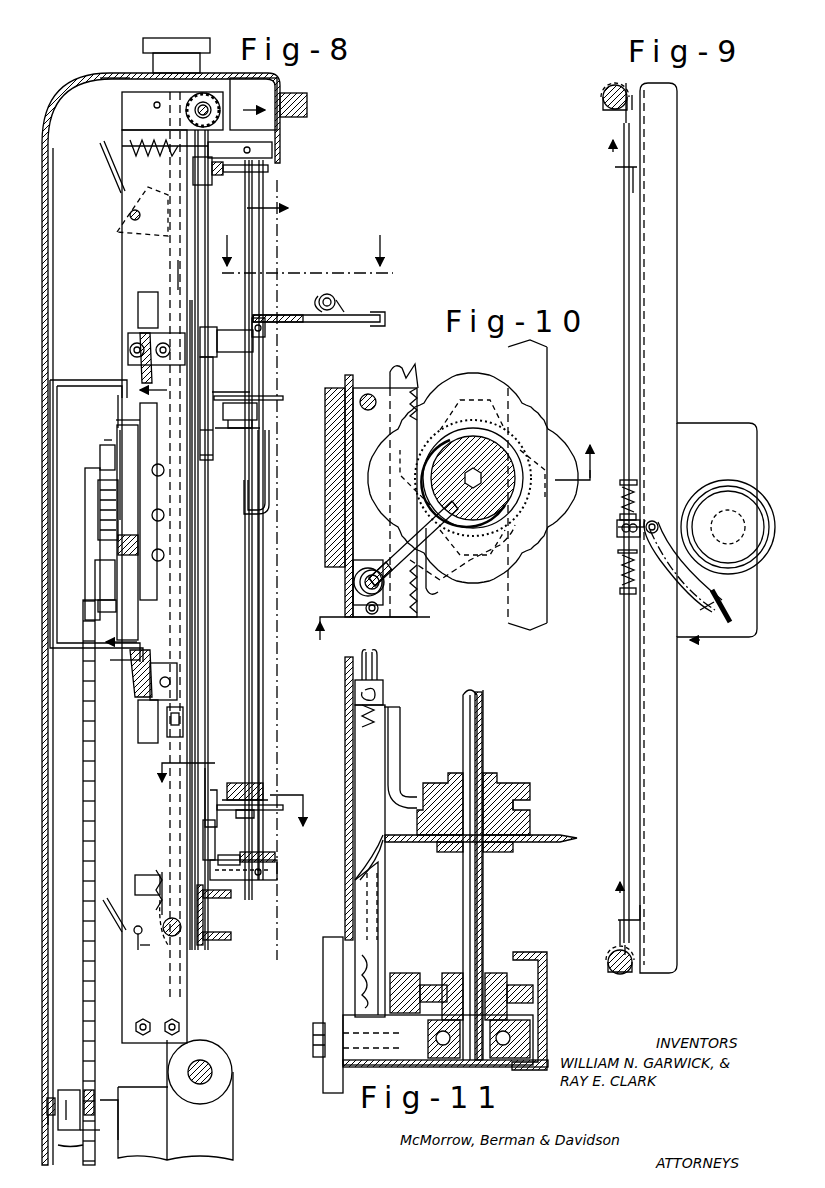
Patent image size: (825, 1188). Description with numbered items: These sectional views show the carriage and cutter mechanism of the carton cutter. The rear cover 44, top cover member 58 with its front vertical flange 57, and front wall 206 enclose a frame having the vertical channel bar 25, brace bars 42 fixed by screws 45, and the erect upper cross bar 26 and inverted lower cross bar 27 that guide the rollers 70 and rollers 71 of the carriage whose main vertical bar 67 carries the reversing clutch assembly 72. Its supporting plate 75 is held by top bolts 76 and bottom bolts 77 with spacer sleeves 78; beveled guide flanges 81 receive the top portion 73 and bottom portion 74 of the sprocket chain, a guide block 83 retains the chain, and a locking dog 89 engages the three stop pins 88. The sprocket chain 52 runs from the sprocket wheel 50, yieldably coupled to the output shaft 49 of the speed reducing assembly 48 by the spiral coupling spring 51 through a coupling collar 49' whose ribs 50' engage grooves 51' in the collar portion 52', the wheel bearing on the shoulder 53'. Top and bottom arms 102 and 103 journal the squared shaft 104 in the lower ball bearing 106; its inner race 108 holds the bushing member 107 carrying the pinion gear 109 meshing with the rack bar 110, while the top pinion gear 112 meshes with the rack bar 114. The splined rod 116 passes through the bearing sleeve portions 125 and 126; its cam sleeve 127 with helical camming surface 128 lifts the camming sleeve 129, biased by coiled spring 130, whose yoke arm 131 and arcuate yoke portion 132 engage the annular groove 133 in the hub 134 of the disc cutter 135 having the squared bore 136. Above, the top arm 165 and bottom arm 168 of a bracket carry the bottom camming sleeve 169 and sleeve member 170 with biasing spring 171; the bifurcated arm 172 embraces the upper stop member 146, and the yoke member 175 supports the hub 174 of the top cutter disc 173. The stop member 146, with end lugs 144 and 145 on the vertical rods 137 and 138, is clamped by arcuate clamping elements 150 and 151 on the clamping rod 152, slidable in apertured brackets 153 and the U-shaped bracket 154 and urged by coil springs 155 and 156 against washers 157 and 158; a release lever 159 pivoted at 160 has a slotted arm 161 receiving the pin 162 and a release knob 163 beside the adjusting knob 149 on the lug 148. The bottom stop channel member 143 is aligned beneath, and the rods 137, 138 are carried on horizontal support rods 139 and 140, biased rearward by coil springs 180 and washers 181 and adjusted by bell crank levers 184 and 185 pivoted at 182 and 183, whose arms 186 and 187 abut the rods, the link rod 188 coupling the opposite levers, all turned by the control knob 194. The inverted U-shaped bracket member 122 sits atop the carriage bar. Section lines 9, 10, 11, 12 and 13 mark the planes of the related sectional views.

In FIG. 8, the rear cover 44 is at (46, 238).
In FIG. 8, the top cover member 58 is at (112, 75).
In FIG. 8, the control knob 194 is at (195, 38).
In FIG. 8, the bracket member 122 is at (205, 92).
In FIG. 8, the front vertical flange 57 is at (276, 142).
In FIG. 8, the horizontal top support rod 139 is at (118, 143).
In FIG. 8, the upwardly extending arm 186 is at (102, 164).
In FIG. 8, the vertical channel bar 25 is at (190, 985).
In FIG. 8, the vertical bearing sleeve portion 125 is at (193, 174).
In FIG. 8, the horizontal rack bar 114 is at (219, 177).
In FIG. 8, the top horizontal arm 102 is at (270, 172).
In FIG. 8, the second vertical rod member 116 is at (205, 315).
In FIG. 10, the second vertical rod member 116 is at (362, 593).
In FIG. 11, the second vertical rod member 116 is at (380, 670).
In FIG. 8, the vertical squared shaft 104 is at (252, 620).
In FIG. 10, the vertical squared shaft 104 is at (480, 448).
In FIG. 11, the vertical squared shaft 104 is at (482, 724).
In FIG. 8, the main vertical supporting bar 67 is at (182, 253).
In FIG. 11, the main vertical supporting bar 67 is at (333, 980).
In FIG. 8, the pivot shaft 182 is at (129, 215).
In FIG. 8, the bell crank lever 184 is at (118, 234).
In FIG. 8, the link rod 188 is at (178, 273).
In FIG. 8, the guide rollers 70 is at (137, 297).
In FIG. 8, the section line 12 is at (287, 209).
In FIG. 8, the section line 9 is at (307, 242).
In FIG. 8, the bifurcated arm 172 is at (235, 335).
In FIG. 8, the top arm 165 is at (207, 327).
In FIG. 8, the release lever 159 is at (318, 300).
In FIG. 9, the release lever 159 is at (656, 522).
In FIG. 8, the release knob 163 is at (337, 306).
In FIG. 9, the release knob 163 is at (726, 624).
In FIG. 8, the upper stop member 146 is at (270, 340).
In FIG. 9, the upper stop member 146 is at (670, 273).
In FIG. 8, the upper camming sleeve 170 is at (212, 380).
In FIG. 8, the biasing spring 171 is at (240, 390).
In FIG. 8, the top cutter disc 173 is at (283, 398).
In FIG. 8, the hub 174 is at (258, 412).
In FIG. 8, the yoke member 175 is at (260, 430).
In FIG. 8, the bottom camming sleeve 169 is at (213, 425).
In FIG. 8, the bottom arm 168 is at (212, 455).
In FIG. 8, the apertured end lug 144 is at (268, 508).
In FIG. 9, the apertured end lug 144 is at (632, 961).
In FIG. 8, the vertical rod member 138 is at (262, 568).
In FIG. 9, the vertical rod member 138 is at (610, 108).
In FIG. 8, the upper cross bar 26 is at (128, 344).
In FIG. 8, the top fastening bolts 76 is at (118, 400).
In FIG. 8, the section line 13 is at (143, 502).
In FIG. 8, the fastening screws 45 is at (48, 412).
In FIG. 8, the reversing clutch assembly 72 is at (116, 424).
In FIG. 8, the vertical supporting plate 75 is at (116, 422).
In FIG. 8, the first locking dog 89 is at (116, 438).
In FIG. 8, the spacer sleeves 78 is at (160, 420).
In FIG. 8, the top portion of sprocket chain 73 is at (100, 452).
In FIG. 8, the vertical brace bars 42 is at (86, 475).
In FIG. 8, the circular guide flanges 81 is at (98, 515).
In FIG. 8, the stop pins 88 is at (138, 545).
In FIG. 8, the bottom portion of sprocket chain 74 is at (95, 572).
In FIG. 8, the guide block 83 is at (135, 597).
In FIG. 8, the lower cross bar 27 is at (145, 665).
In FIG. 8, the bottom fastening bolts 77 is at (125, 655).
In FIG. 8, the guide rollers 71 is at (148, 745).
In FIG. 8, the sprocket chain 52 is at (74, 882).
In FIG. 8, the front wall 206 is at (197, 640).
In FIG. 10, the front wall 206 is at (350, 378).
In FIG. 11, the front wall 206 is at (348, 903).
In FIG. 8, the section line 10 is at (241, 797).
In FIG. 8, the yoke arm 131 is at (215, 768).
In FIG. 10, the yoke arm 131 is at (434, 590).
In FIG. 11, the yoke arm 131 is at (397, 760).
In FIG. 8, the hub 134 is at (263, 783).
In FIG. 10, the hub 134 is at (500, 430).
In FIG. 11, the hub 134 is at (505, 780).
In FIG. 8, the disc cutter 135 is at (275, 812).
In FIG. 10, the disc cutter 135 is at (555, 432).
In FIG. 11, the disc cutter 135 is at (550, 835).
In FIG. 8, the cam sleeve 127 is at (213, 822).
In FIG. 11, the cam sleeve 127 is at (383, 896).
In FIG. 8, the horizontal rack bar 110 is at (225, 870).
In FIG. 10, the horizontal rack bar 110 is at (397, 372).
In FIG. 11, the horizontal rack bar 110 is at (389, 861).
In FIG. 8, the top pinion gear 112 is at (277, 858).
In FIG. 8, the channel member 143 is at (280, 880).
In FIG. 11, the channel member 143 is at (548, 990).
In FIG. 8, the coil springs 180 is at (153, 870).
In FIG. 8, the horizontal bottom support rod 140 is at (140, 880).
In FIG. 8, the bottom horizontal arm 103 is at (245, 900).
In FIG. 11, the bottom horizontal arm 103 is at (370, 1064).
In FIG. 8, the upwardly extending arm 187 is at (105, 922).
In FIG. 8, the bell crank lever 185 is at (135, 955).
In FIG. 8, the washers 181 is at (170, 937).
In FIG. 8, the pivot 183 is at (145, 950).
In FIG. 8, the speed reducing assembly 48 is at (225, 1118).
In FIG. 8, the spiral coupling spring 51 is at (66, 1087).
In FIG. 8, the coupling ribs 50' is at (72, 1093).
In FIG. 8, the collar portion 52' is at (105, 1086).
In FIG. 8, the output shaft 49 is at (31, 1100).
In FIG. 8, the annular bearing shoulder 53' is at (123, 1117).
In FIG. 8, the coupling collar 49' is at (35, 1130).
In FIG. 8, the coupling grooves 51' is at (115, 1131).
In FIG. 8, the sprocket wheel 50 is at (64, 1157).
In FIG. 10, the section line 11 is at (463, 547).
In FIG. 10, the camming sleeve 129 is at (371, 571).
In FIG. 11, the camming sleeve 129 is at (386, 722).
In FIG. 10, the coiled spring 130 is at (372, 615).
In FIG. 11, the coiled spring 130 is at (368, 723).
In FIG. 10, the squared central bore 136 is at (510, 500).
In FIG. 11, the squared central bore 136 is at (495, 852).
In FIG. 10, the arcuate yoke portion 132 is at (538, 558).
In FIG. 11, the upstanding bearing sleeve portion 126 is at (357, 1007).
In FIG. 11, the annular groove 133 is at (528, 803).
In FIG. 11, the helical camming surface 128 is at (380, 850).
In FIG. 11, the pinion gear 109 is at (428, 973).
In FIG. 11, the bushing member 107 is at (515, 1008).
In FIG. 11, the ball bearing 106 is at (445, 1063).
In FIG. 11, the inner race 108 is at (503, 1068).
In FIG. 9, the forwardly extending lug 148 is at (720, 423).
In FIG. 9, the clamping rod 152 is at (624, 672).
In FIG. 9, the apertured end lug 145 is at (618, 85).
In FIG. 9, the clamping element 150 is at (603, 97).
In FIG. 9, the apertured brackets 153 is at (618, 170).
In FIG. 9, the main adjusting knob 149 is at (725, 480).
In FIG. 9, the U-shaped bracket 154 is at (640, 482).
In FIG. 9, the coil spring 155 is at (622, 504).
In FIG. 9, the washer 157 is at (618, 518).
In FIG. 9, the pivot 160 is at (648, 520).
In FIG. 9, the slotted arm 161 is at (618, 531).
In FIG. 9, the pin 162 is at (618, 548).
In FIG. 9, the coil spring 156 is at (622, 579).
In FIG. 9, the washer 158 is at (620, 595).
In FIG. 9, the clamping element 151 is at (608, 955).
In FIG. 9, the vertical rod member 137 is at (622, 975).